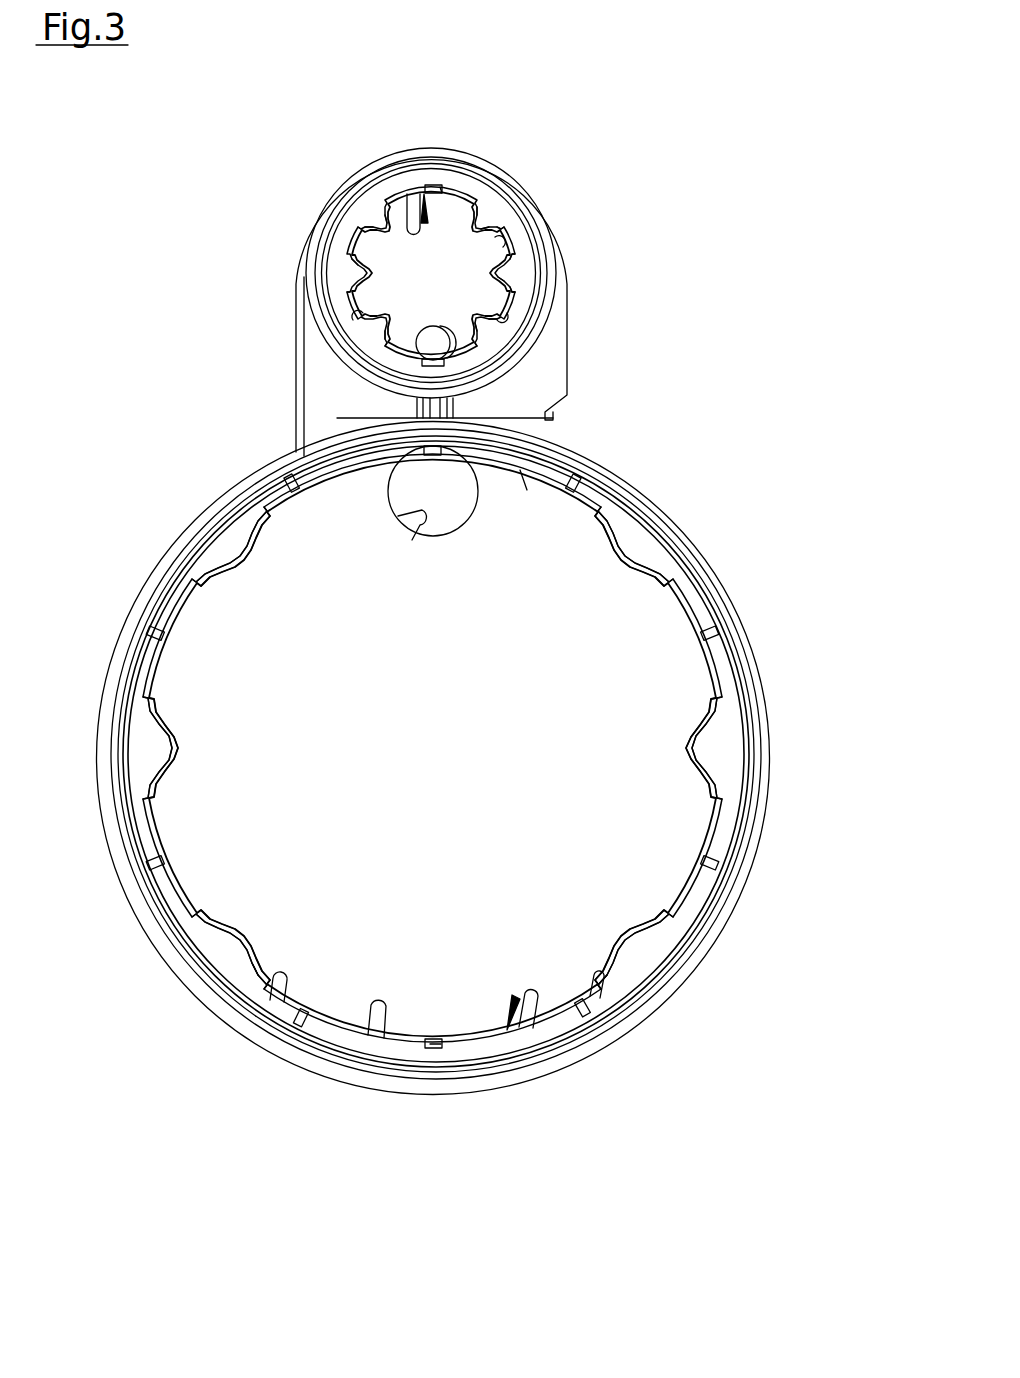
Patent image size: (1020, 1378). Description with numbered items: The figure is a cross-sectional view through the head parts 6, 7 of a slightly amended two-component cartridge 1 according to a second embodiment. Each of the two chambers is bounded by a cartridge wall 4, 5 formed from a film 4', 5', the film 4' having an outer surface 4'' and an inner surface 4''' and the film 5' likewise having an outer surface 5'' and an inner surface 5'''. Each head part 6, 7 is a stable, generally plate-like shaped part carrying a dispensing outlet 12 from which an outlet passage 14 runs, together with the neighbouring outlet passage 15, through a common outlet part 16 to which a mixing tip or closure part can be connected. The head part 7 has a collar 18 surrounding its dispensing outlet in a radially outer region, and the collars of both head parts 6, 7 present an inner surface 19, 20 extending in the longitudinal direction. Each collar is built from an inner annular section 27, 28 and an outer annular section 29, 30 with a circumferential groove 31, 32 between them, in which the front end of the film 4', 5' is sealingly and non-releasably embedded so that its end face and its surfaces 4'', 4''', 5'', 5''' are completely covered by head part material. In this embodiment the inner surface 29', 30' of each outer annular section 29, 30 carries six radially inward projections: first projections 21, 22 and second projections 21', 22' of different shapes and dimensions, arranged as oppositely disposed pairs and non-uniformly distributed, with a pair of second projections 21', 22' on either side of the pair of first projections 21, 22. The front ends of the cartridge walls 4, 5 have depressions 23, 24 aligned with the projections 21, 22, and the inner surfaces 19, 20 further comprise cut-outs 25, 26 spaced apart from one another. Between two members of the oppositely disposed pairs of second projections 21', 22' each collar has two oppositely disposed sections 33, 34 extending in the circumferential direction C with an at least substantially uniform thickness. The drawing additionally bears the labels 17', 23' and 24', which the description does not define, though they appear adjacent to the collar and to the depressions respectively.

The cartridge 1 is at (760, 340).
The cartridge wall 4 is at (488, 748).
The film 4' is at (598, 1055).
The outer surface 4'' is at (621, 1062).
The inner surface 4''' is at (646, 1038).
The cartridge wall 5 is at (431, 210).
The film 5' is at (583, 245).
The outer surface 5'' is at (586, 311).
The inner surface 5''' is at (589, 336).
The head part 6 is at (766, 862).
The head part 7 is at (568, 305).
The dispensing outlet 12 is at (455, 500).
The outlet passage 14 is at (415, 540).
The outlet passage 15 is at (522, 335).
The outlet part 16 is at (330, 389).
The tab 17' is at (462, 1107).
The collar 18 is at (538, 200).
The inner surface 19 is at (546, 1030).
The inner surface 20 is at (410, 192).
The first projection 21 is at (433, 748).
The second projection 21' is at (430, 750).
The first projection 22 is at (438, 260).
The second projection 22' is at (472, 244).
The depression 23 is at (433, 748).
The inner bulge 23' is at (432, 788).
The depression 24 is at (430, 228).
The recess 24' is at (432, 224).
The cut-out 25 is at (290, 488).
The cut-out 26 is at (433, 184).
The inner annular section 27 is at (366, 1036).
The inner annular section 28 is at (340, 330).
The outer annular section 29 is at (251, 1049).
The inner surface 29' is at (209, 1019).
The outer annular section 30 is at (280, 287).
The inner surface 30' is at (567, 211).
The circumferential groove 31 is at (300, 1026).
The circumferential groove 32 is at (345, 292).
The section 33 is at (525, 478).
The section 34 is at (441, 186).
The circumferential direction C is at (652, 1198).